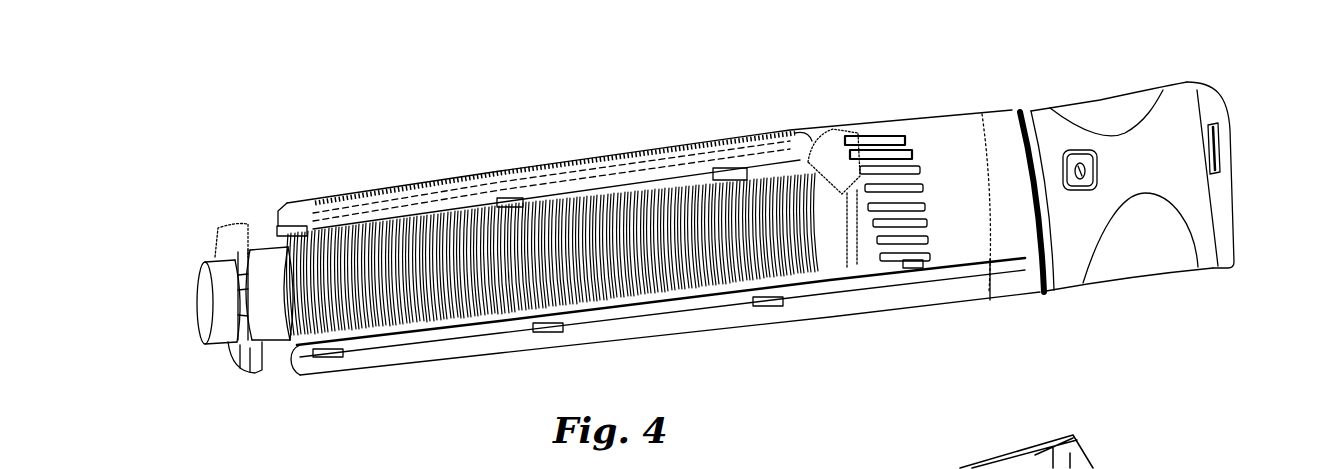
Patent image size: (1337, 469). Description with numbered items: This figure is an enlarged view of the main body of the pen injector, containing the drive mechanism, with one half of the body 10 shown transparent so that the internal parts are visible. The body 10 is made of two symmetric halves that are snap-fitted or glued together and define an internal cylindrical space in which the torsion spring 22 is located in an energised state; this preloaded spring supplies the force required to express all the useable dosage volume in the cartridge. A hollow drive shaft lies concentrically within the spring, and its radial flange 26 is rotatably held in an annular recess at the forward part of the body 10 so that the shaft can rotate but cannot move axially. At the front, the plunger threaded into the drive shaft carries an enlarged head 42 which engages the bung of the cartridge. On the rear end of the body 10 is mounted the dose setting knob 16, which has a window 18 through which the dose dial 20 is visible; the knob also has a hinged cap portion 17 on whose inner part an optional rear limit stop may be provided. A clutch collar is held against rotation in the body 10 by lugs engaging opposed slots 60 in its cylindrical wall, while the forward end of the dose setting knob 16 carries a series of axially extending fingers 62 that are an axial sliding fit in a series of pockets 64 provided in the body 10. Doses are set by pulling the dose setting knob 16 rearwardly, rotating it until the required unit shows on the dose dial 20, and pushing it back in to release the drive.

The body 10 is at (706, 315).
The dose setting knob 16 is at (1210, 243).
The hinged cap portion 17 is at (1230, 213).
The window 18 is at (1067, 150).
The dose dial 20 is at (1080, 157).
The torsion spring 22 is at (418, 310).
The radial flange 26 is at (270, 262).
The enlarged head 42 is at (223, 320).
The slots 60 is at (827, 163).
The fingers 62 is at (920, 230).
The pockets 64 is at (870, 268).